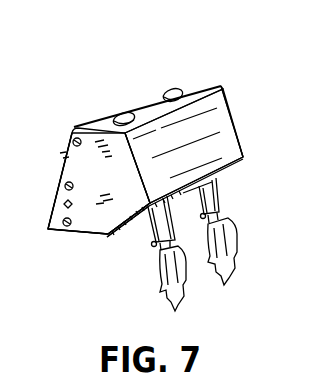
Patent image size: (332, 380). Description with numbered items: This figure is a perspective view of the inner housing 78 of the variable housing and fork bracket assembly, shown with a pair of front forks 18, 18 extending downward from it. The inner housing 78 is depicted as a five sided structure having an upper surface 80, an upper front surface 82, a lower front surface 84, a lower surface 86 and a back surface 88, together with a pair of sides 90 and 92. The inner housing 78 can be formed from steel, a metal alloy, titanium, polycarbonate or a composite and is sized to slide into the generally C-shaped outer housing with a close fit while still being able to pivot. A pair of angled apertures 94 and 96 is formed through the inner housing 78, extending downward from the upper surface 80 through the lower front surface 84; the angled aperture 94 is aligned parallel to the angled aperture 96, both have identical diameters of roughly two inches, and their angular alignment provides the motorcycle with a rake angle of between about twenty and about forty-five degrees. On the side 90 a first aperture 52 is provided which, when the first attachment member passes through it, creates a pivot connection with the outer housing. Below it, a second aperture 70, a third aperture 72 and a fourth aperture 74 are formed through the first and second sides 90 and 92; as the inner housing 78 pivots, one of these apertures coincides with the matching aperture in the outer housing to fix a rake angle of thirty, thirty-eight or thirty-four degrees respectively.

The inner housing 78 is at (257, 65).
The upper surface 80 is at (193, 90).
The upper front surface 82 is at (230, 138).
The lower front surface 84 is at (135, 219).
The lower surface 86 is at (92, 234).
The back surface 88 is at (58, 159).
The first side 90 is at (102, 180).
The second side 92 is at (229, 108).
The angled aperture 94 is at (118, 113).
The angled aperture 96 is at (167, 88).
The first aperture 52 is at (74, 140).
The second aperture 70 is at (65, 185).
The third aperture 72 is at (64, 204).
The fourth aperture 74 is at (66, 227).
The front fork 18 is at (154, 249).